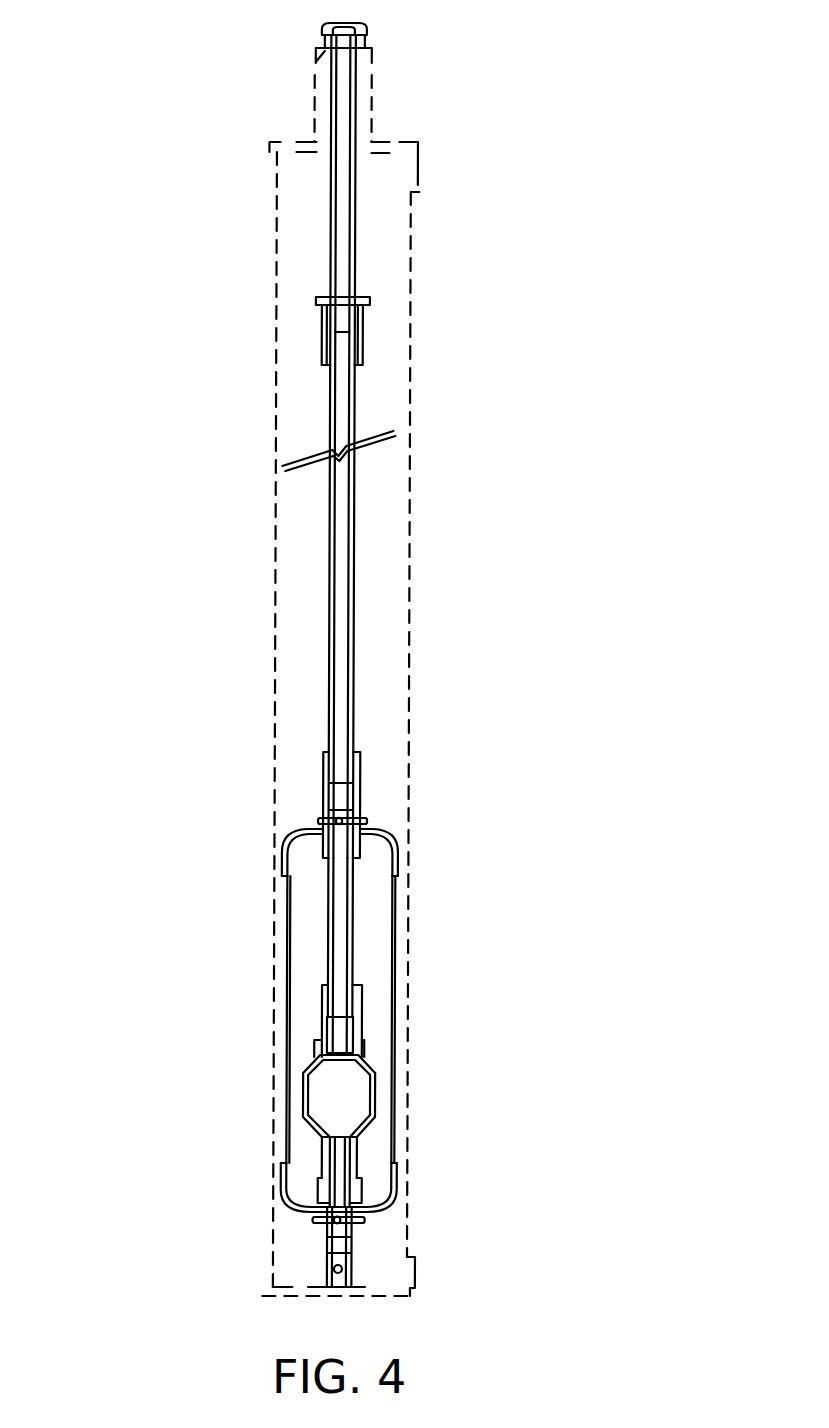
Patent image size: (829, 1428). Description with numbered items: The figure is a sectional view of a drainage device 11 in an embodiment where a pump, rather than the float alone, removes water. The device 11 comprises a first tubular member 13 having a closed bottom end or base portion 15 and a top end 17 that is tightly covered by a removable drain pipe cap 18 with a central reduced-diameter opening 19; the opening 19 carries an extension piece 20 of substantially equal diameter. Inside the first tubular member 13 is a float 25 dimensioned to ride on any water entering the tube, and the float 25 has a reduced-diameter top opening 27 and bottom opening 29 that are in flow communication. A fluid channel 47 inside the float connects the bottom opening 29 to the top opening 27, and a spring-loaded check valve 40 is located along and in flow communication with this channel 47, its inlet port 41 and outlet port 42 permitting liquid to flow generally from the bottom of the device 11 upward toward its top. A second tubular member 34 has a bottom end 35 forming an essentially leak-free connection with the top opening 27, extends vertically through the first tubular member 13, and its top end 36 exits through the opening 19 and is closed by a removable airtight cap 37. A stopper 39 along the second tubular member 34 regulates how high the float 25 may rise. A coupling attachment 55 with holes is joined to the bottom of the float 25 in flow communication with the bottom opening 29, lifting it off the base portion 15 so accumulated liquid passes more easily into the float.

The device 11 is at (443, 430).
The first tubular member 13 is at (412, 541).
The base portion 15 is at (421, 1285).
The top end 17 is at (271, 176).
The cap 18 is at (420, 166).
The opening 19 is at (320, 60).
The extension piece 20 is at (372, 85).
The float 25 is at (399, 966).
The top opening 27 is at (329, 818).
The bottom opening 29 is at (330, 1230).
The second tubular member 34 is at (343, 515).
The bottom end 35 is at (349, 798).
The top end 36 is at (328, 44).
The cap 37 is at (364, 33).
The stopper 39 is at (328, 314).
The check valve 40 is at (346, 1103).
The inlet port 41 is at (346, 1148).
The outlet port 42 is at (346, 1047).
The fluid channel 47 is at (343, 925).
The coupling attachment 55 is at (338, 1268).